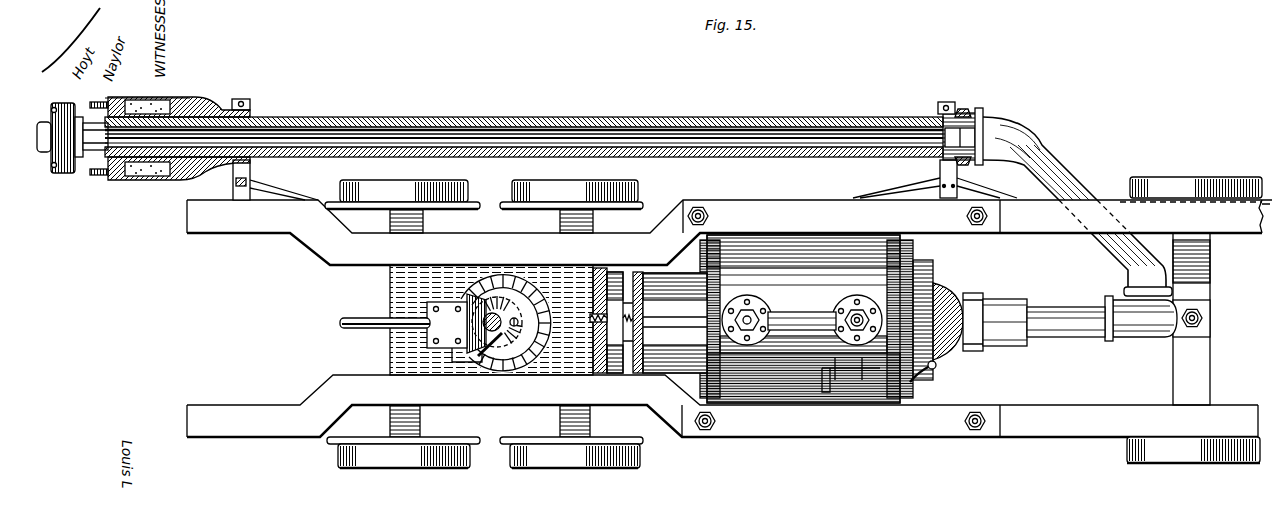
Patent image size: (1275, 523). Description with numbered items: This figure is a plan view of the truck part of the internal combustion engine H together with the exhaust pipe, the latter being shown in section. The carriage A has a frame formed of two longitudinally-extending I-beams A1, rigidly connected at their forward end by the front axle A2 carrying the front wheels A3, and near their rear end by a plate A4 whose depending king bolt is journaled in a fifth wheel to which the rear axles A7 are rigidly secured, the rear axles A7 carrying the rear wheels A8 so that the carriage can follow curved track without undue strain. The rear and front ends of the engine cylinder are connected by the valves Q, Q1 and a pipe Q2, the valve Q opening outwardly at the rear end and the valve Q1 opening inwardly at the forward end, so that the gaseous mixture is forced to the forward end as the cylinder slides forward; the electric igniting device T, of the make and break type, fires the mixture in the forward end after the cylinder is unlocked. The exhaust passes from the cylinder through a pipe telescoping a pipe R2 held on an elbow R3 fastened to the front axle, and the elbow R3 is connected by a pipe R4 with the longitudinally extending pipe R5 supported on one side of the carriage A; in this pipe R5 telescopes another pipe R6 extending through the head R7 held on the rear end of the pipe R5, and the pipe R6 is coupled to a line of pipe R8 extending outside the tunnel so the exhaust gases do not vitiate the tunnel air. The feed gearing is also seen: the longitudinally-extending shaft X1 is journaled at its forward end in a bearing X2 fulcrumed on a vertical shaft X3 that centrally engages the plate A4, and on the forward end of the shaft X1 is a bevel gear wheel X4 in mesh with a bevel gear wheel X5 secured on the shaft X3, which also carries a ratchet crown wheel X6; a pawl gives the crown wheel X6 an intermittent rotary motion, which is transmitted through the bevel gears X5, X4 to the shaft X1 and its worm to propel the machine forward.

The carriage A is at (666, 328).
The I-beams A1 is at (192, 235).
The front axle A2 is at (1175, 377).
The front wheels A3 is at (1193, 178).
The plate A4 is at (428, 293).
The rear axles A7 is at (424, 223).
The rear wheels A8 is at (446, 205).
The internal combustion engine H is at (816, 319).
The valve Q is at (747, 306).
The valve Q1 is at (866, 307).
The pipe Q2 is at (816, 316).
The electric igniting device T is at (922, 370).
The pipe R2 is at (1019, 318).
The elbow R3 is at (1141, 333).
The pipe R4 is at (1058, 165).
The longitudinally extending pipe R5 is at (812, 117).
The pipe R6 is at (433, 117).
The head R7 is at (170, 126).
The line of pipe R8 is at (50, 112).
The shaft X1 is at (384, 336).
The bearing X2 is at (480, 362).
The vertical shaft X3 is at (514, 362).
The bevel gear wheel X4 is at (470, 295).
The bevel gear wheel X5 is at (527, 308).
The ratchet crown wheel X6 is at (516, 290).